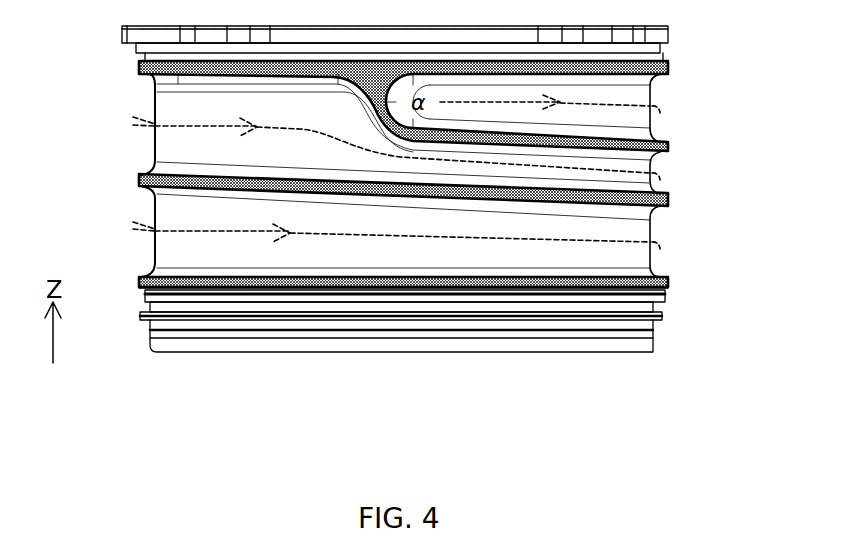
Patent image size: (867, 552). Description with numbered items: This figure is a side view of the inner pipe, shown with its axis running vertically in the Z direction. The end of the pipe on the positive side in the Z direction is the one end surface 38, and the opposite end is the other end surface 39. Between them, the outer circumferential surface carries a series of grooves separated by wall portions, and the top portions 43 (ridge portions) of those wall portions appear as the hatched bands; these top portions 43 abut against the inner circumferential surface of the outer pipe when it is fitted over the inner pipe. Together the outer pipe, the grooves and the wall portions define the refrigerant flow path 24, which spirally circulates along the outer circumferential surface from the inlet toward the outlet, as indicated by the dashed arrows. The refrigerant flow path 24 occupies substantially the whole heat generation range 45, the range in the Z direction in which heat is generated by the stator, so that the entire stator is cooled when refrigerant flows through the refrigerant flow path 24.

The one end surface 38 is at (680, 28).
The other end surface 39 is at (680, 353).
The top portions 43 is at (139, 68).
The refrigerant flow path 24 is at (163, 137).
The heat generation range 45 is at (670, 63).